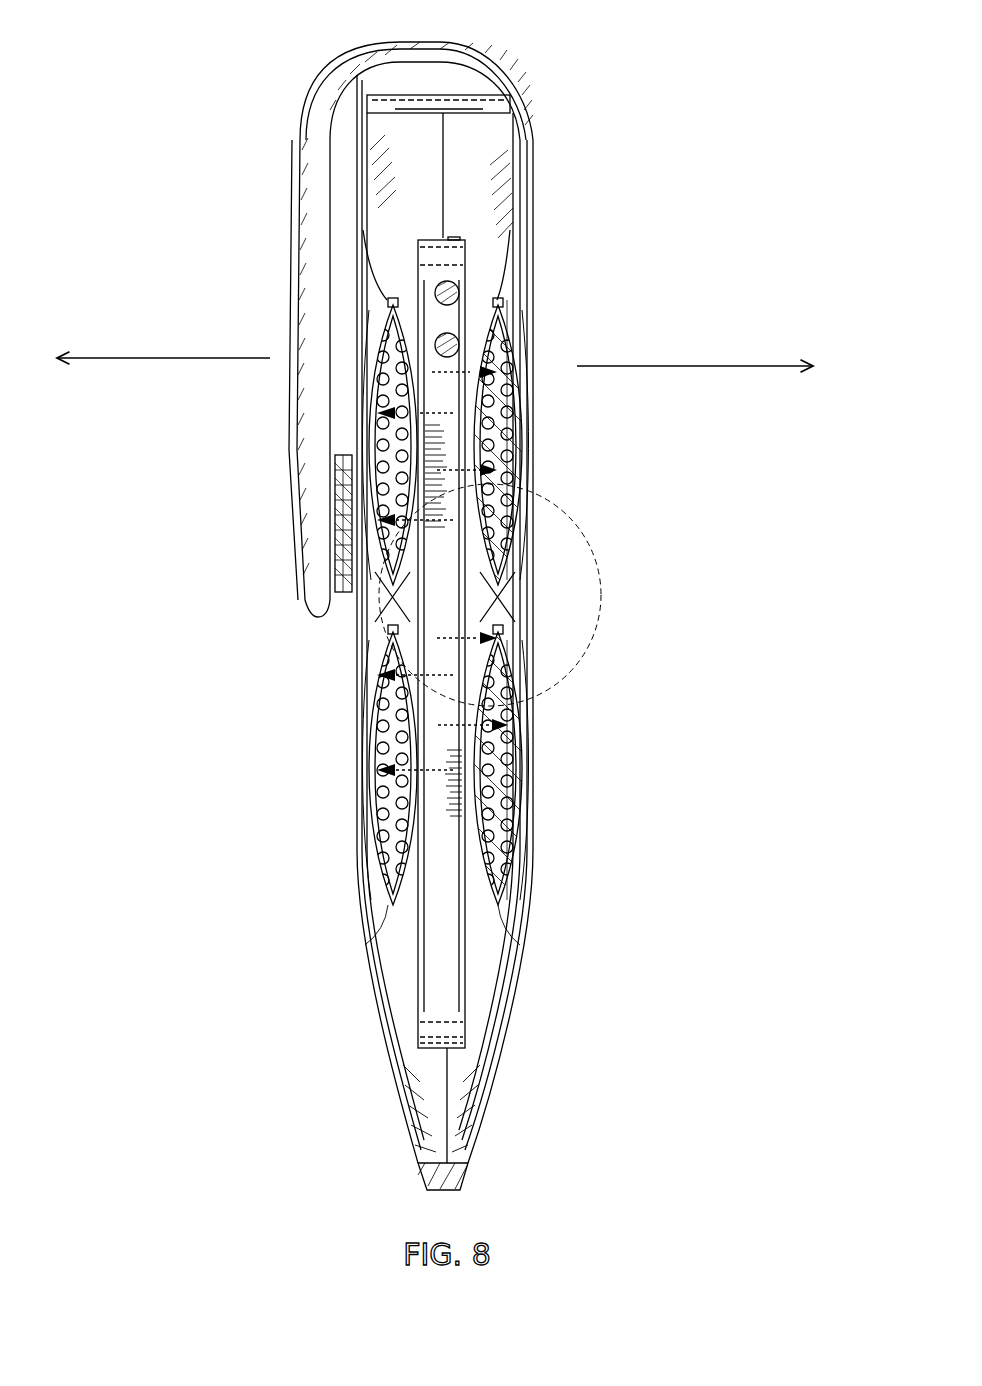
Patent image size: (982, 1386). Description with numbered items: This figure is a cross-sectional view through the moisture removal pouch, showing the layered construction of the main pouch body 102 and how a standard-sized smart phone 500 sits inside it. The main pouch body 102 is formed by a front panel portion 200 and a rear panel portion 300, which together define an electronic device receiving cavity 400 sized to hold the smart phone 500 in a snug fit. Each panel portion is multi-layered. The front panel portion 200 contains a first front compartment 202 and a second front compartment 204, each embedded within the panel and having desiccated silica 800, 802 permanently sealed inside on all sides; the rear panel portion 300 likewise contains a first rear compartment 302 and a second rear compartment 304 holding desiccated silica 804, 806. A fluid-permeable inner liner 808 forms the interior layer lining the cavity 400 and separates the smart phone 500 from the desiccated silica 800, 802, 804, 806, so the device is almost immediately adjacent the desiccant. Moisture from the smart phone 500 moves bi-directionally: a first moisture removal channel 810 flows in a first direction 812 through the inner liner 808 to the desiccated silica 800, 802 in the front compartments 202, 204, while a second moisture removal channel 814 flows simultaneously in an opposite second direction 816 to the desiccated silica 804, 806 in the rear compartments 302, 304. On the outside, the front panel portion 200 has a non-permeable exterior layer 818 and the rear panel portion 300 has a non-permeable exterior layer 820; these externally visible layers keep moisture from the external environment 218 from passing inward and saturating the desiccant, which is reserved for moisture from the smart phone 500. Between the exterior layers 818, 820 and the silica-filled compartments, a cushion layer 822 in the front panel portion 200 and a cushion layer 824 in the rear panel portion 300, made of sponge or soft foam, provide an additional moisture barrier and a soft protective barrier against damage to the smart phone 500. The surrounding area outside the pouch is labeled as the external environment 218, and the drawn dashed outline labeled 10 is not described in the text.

The device 10 is at (590, 525).
The main pouch body 102 is at (550, 422).
The front panel portion 200 is at (340, 637).
The first front compartment 202 is at (370, 350).
The second front compartment 204 is at (362, 716).
The external environment 218 is at (756, 752).
The rear panel portion 300 is at (550, 628).
The first rear compartment 302 is at (510, 347).
The second rear compartment 304 is at (520, 720).
The electronic device receiving cavity 400 is at (458, 175).
The smart phone 500 is at (467, 290).
The desiccated silica 800 is at (370, 427).
The desiccated silica 802 is at (355, 805).
The desiccated silica 804 is at (520, 433).
The desiccated silica 806 is at (530, 787).
The fluid-permeable inner liner 808 is at (387, 267).
The first moisture removal channel 810 is at (430, 393).
The first direction 812 is at (148, 358).
The second moisture removal channel 814 is at (455, 362).
The second direction 816 is at (715, 365).
The exterior layer 818 is at (350, 832).
The exterior layer 820 is at (535, 870).
The cushion layer 822 is at (378, 596).
The cushion layer 824 is at (507, 590).